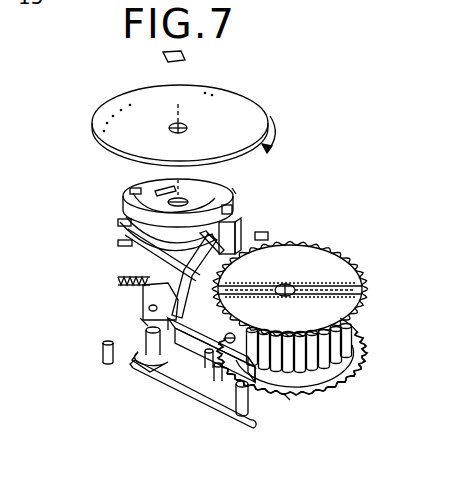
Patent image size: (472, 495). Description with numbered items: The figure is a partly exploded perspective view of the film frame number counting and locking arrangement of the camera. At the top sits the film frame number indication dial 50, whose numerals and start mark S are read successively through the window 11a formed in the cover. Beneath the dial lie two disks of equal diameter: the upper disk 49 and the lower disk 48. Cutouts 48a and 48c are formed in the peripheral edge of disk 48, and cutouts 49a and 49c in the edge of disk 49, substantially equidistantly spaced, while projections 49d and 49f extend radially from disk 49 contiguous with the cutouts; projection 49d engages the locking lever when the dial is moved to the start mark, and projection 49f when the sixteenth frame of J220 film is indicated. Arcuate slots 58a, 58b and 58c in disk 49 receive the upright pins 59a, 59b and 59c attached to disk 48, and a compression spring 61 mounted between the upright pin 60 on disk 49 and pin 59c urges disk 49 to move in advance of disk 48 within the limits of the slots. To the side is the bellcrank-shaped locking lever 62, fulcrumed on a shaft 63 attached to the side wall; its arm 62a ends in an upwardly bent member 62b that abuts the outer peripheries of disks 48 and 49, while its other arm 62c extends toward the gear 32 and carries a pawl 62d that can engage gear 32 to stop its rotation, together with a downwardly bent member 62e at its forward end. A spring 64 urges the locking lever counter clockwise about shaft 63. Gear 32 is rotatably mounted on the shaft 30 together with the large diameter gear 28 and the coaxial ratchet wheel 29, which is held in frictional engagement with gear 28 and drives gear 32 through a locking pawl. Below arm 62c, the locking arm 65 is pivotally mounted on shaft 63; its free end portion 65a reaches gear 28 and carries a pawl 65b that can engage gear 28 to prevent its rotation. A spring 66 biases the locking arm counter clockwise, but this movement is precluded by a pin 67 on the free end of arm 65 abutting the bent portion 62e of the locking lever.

The window 11a is at (183, 58).
The film frame number indication dial 50 is at (236, 105).
The disk 49 is at (122, 182).
The cutout 49a is at (237, 240).
The cutout 49c is at (122, 203).
The projection 49d is at (268, 236).
The projection 49f is at (120, 225).
The arcuate slot 58a is at (232, 210).
The arcuate slot 58b is at (200, 168).
The arcuate slot 58c is at (130, 191).
The upright pin 59a is at (236, 186).
The upright pin 59b is at (160, 188).
The upright pin 59c is at (160, 248).
The compression spring 61 is at (197, 201).
The disk 48 is at (118, 279).
The cutout 48a is at (220, 258).
The cutout 48c is at (118, 244).
The upright pin 60 is at (122, 283).
The spring 64 is at (148, 302).
The shaft 63 is at (140, 318).
The locking lever 62 is at (147, 331).
The arm 62a is at (232, 333).
The upwardly bent member 62b is at (286, 284).
The arm 62c is at (214, 375).
The pawl 62d is at (268, 330).
The downwardly bent member 62e is at (288, 396).
The gear 32 is at (314, 254).
The shaft 30 is at (362, 290).
The ratchet wheel 29 is at (348, 344).
The large diameter gear 28 is at (342, 379).
The locking arm 65 is at (158, 366).
The free end portion 65a is at (246, 422).
The pawl 65b is at (185, 386).
The spring 66 is at (110, 362).
The pin 67 is at (258, 418).